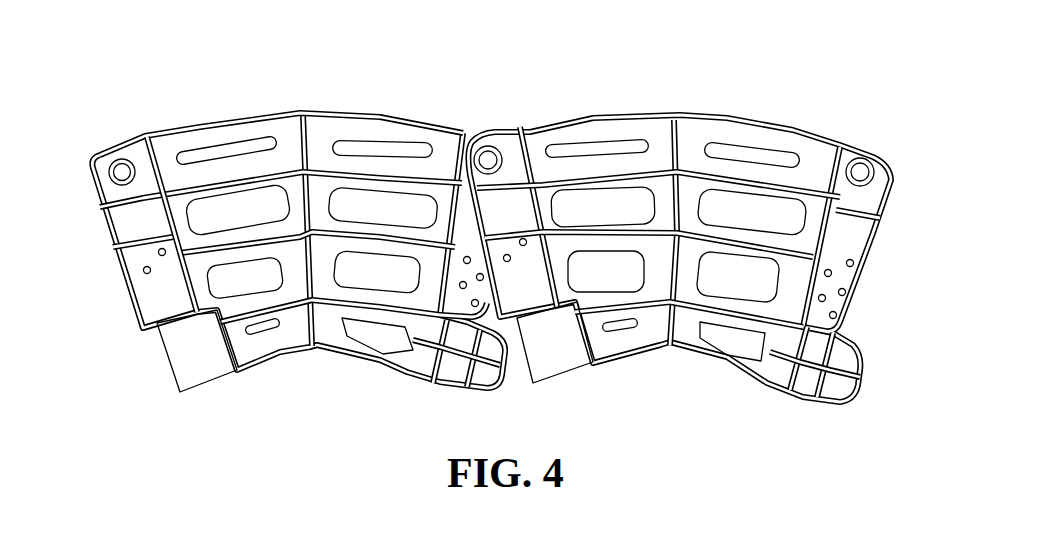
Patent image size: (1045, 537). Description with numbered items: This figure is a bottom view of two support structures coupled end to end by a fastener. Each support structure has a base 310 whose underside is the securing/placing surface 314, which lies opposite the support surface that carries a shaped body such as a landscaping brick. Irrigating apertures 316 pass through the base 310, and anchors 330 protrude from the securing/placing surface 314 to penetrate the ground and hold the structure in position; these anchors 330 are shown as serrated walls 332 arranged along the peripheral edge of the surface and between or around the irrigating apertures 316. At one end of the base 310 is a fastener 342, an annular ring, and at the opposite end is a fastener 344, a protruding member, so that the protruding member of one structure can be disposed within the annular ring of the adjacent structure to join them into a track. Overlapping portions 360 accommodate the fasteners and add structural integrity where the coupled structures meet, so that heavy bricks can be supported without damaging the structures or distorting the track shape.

The base 310 is at (297, 278).
The securing/placing surface 314 is at (297, 138).
The irrigating aperture 316 is at (178, 214).
The anchor 330 is at (388, 178).
The serrated wall 332 is at (192, 208).
The fastener (annular ring) 342 is at (489, 160).
The fastener (protruding member) 344 is at (502, 160).
The overlapping portion 360 is at (835, 259).